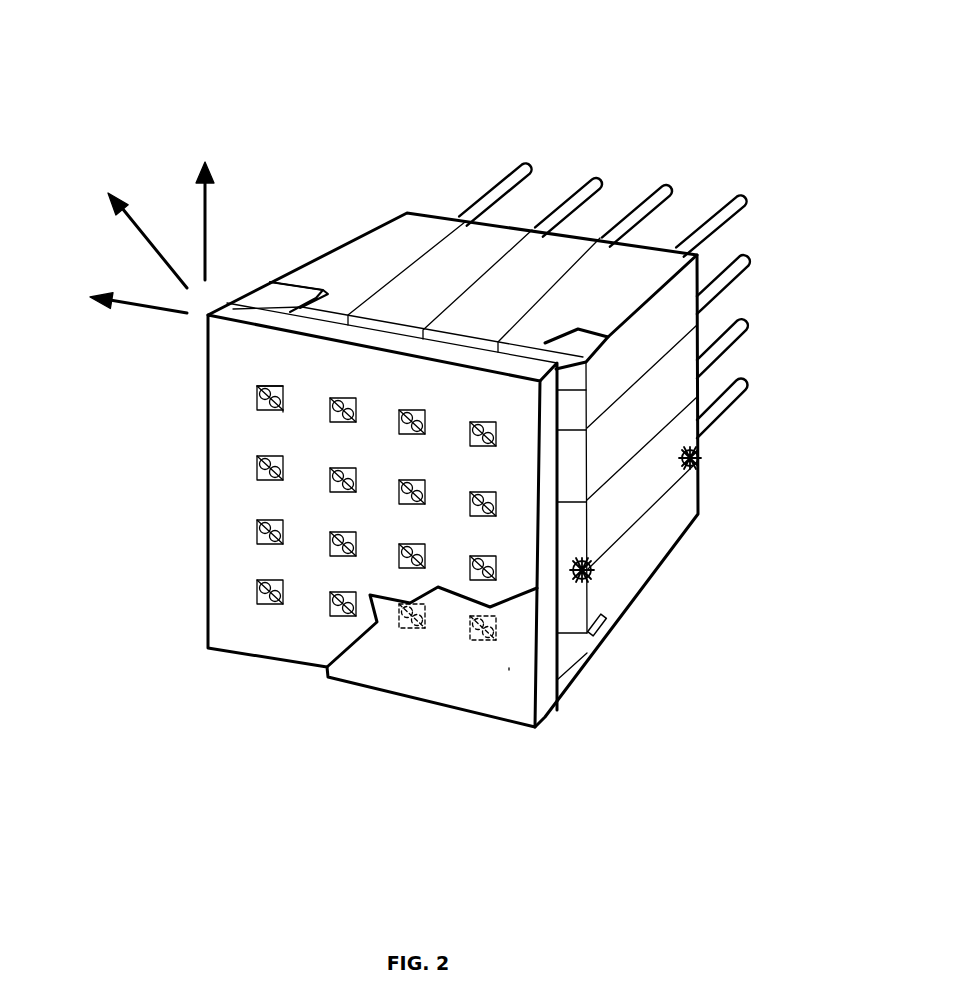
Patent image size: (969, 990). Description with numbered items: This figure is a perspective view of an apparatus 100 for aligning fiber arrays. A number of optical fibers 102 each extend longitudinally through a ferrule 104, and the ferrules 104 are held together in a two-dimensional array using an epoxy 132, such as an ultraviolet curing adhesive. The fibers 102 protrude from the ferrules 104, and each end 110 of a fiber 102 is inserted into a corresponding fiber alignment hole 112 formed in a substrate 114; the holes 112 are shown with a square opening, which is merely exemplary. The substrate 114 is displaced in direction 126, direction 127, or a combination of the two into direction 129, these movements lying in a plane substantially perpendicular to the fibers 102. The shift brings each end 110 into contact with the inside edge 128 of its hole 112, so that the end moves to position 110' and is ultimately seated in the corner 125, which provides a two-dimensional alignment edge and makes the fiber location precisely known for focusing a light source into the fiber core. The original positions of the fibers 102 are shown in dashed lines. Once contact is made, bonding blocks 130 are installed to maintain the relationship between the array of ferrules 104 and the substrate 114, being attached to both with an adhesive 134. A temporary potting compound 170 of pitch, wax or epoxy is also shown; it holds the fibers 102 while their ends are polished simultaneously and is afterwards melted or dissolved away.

The apparatus 100 is at (113, 77).
The optical fibers 102 is at (472, 211).
The ferrule 104 is at (400, 237).
The end of fiber 110 is at (297, 497).
The position of fiber end 110' is at (188, 442).
The fiber alignment hole 112 is at (258, 388).
The substrate 114 is at (405, 660).
The corner 125 is at (293, 420).
The direction 126 is at (203, 223).
The direction 127 is at (143, 308).
The inside edge 128 is at (262, 407).
The combined direction 129 is at (153, 255).
The bonding blocks 130 is at (273, 297).
The epoxy 132 is at (700, 462).
The adhesive 134 is at (323, 300).
The temporary potting compound 170 is at (509, 668).